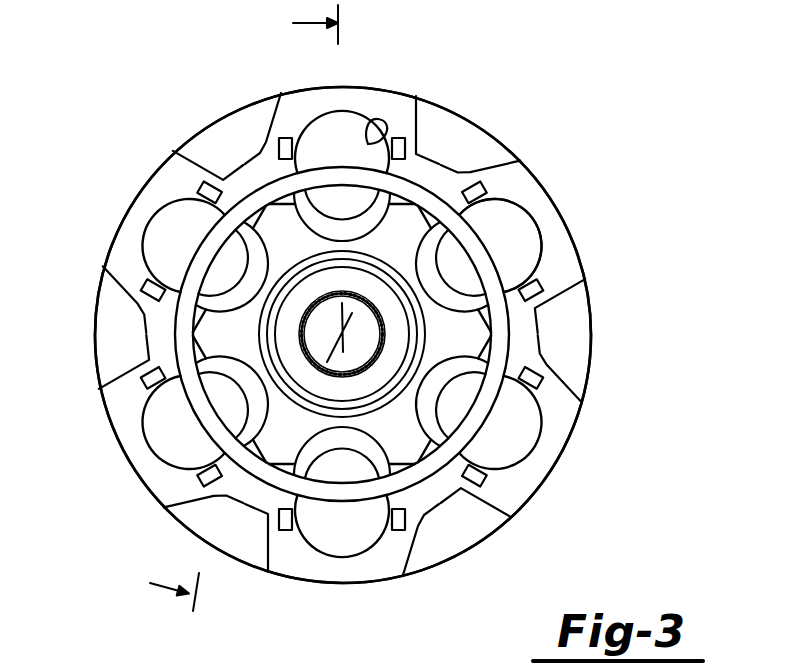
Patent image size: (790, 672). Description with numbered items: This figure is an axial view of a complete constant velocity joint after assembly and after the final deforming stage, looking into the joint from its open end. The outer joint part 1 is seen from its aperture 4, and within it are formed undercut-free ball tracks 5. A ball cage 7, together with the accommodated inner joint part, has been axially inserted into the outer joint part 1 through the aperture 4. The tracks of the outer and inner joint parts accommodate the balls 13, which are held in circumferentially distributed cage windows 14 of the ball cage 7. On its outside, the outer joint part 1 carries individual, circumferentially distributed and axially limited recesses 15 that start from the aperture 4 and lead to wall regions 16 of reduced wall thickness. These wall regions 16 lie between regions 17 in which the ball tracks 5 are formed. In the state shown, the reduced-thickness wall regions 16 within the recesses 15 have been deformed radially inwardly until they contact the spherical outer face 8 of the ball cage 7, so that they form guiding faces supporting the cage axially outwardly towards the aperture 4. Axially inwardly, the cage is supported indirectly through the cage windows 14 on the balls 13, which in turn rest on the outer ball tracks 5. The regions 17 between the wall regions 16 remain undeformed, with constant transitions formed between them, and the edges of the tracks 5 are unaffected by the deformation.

The outer joint part 1 is at (343, 324).
The aperture 4 is at (227, 308).
The ball tracks 5 is at (382, 91).
The ball cage 7 is at (342, 417).
The spherical outer face 8 is at (342, 397).
The balls 13 is at (370, 334).
The cage windows 14 is at (548, 238).
The recesses 15 is at (103, 206).
The wall regions 16 is at (121, 159).
The regions 17 is at (211, 111).